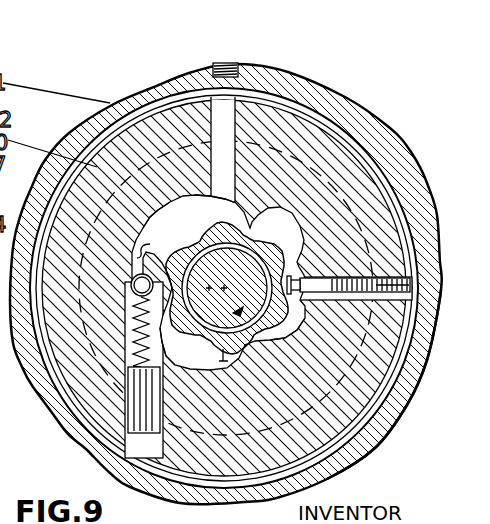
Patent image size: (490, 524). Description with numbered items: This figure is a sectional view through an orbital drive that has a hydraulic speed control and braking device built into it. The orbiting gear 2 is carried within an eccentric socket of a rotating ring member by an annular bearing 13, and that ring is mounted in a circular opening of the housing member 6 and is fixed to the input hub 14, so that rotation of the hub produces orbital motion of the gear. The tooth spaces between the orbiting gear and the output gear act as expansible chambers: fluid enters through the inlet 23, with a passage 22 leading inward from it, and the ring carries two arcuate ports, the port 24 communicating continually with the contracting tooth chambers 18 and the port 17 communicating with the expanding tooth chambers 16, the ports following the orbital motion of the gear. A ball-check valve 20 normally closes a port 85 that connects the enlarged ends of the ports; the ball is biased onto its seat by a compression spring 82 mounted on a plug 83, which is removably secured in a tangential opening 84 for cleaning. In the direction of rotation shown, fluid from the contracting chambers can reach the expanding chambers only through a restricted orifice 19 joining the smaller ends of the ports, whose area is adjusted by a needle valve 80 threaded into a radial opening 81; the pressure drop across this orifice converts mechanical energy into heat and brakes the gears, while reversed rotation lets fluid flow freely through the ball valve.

The annular bearing 13 is at (297, 64).
The housing member 6 is at (378, 437).
The input hub 14 is at (262, 215).
The restricted orifice 19 is at (297, 268).
The inlet passage 22 is at (215, 108).
The inlet 23 is at (221, 62).
The expanding tooth chambers 16 is at (178, 236).
The arcuate port 17 is at (165, 209).
The contracting tooth chambers 18 is at (177, 355).
The orbiting gear 2 is at (198, 369).
The arcuate port 24 is at (262, 366).
The needle valve 80 is at (351, 299).
The radial opening 81 is at (384, 299).
The port 85 is at (137, 249).
The ball-check valve 20 is at (131, 279).
The compression spring 82 is at (125, 305).
The plug 83 is at (137, 390).
The tangential opening 84 is at (144, 412).